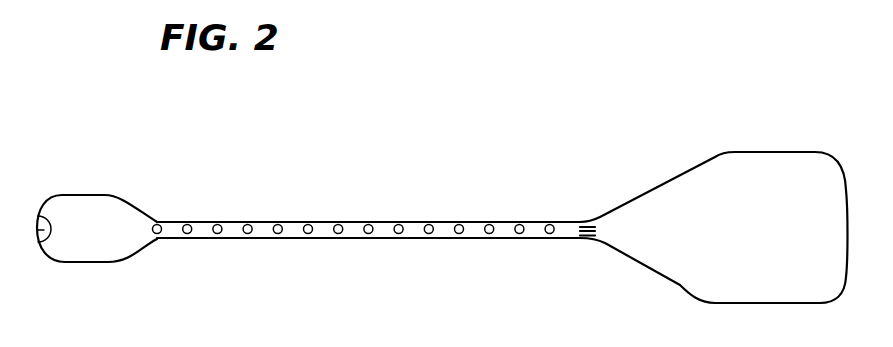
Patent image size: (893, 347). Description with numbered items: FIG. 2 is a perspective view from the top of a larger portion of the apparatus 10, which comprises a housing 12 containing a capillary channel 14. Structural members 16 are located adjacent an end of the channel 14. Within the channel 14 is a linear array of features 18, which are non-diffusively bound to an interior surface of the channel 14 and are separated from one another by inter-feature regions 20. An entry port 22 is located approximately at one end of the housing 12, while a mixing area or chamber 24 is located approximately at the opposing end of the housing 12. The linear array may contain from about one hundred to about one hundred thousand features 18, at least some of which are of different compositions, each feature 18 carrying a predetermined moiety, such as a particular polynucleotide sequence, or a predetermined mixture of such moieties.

The apparatus 10 is at (322, 284).
The housing 12 is at (323, 224).
The capillary channel 14 is at (572, 239).
The structural members 16 is at (578, 222).
The features 18 is at (307, 240).
The inter-feature regions 20 is at (322, 227).
The entry port 22 is at (37, 214).
The mixing area or chamber 24 is at (708, 188).